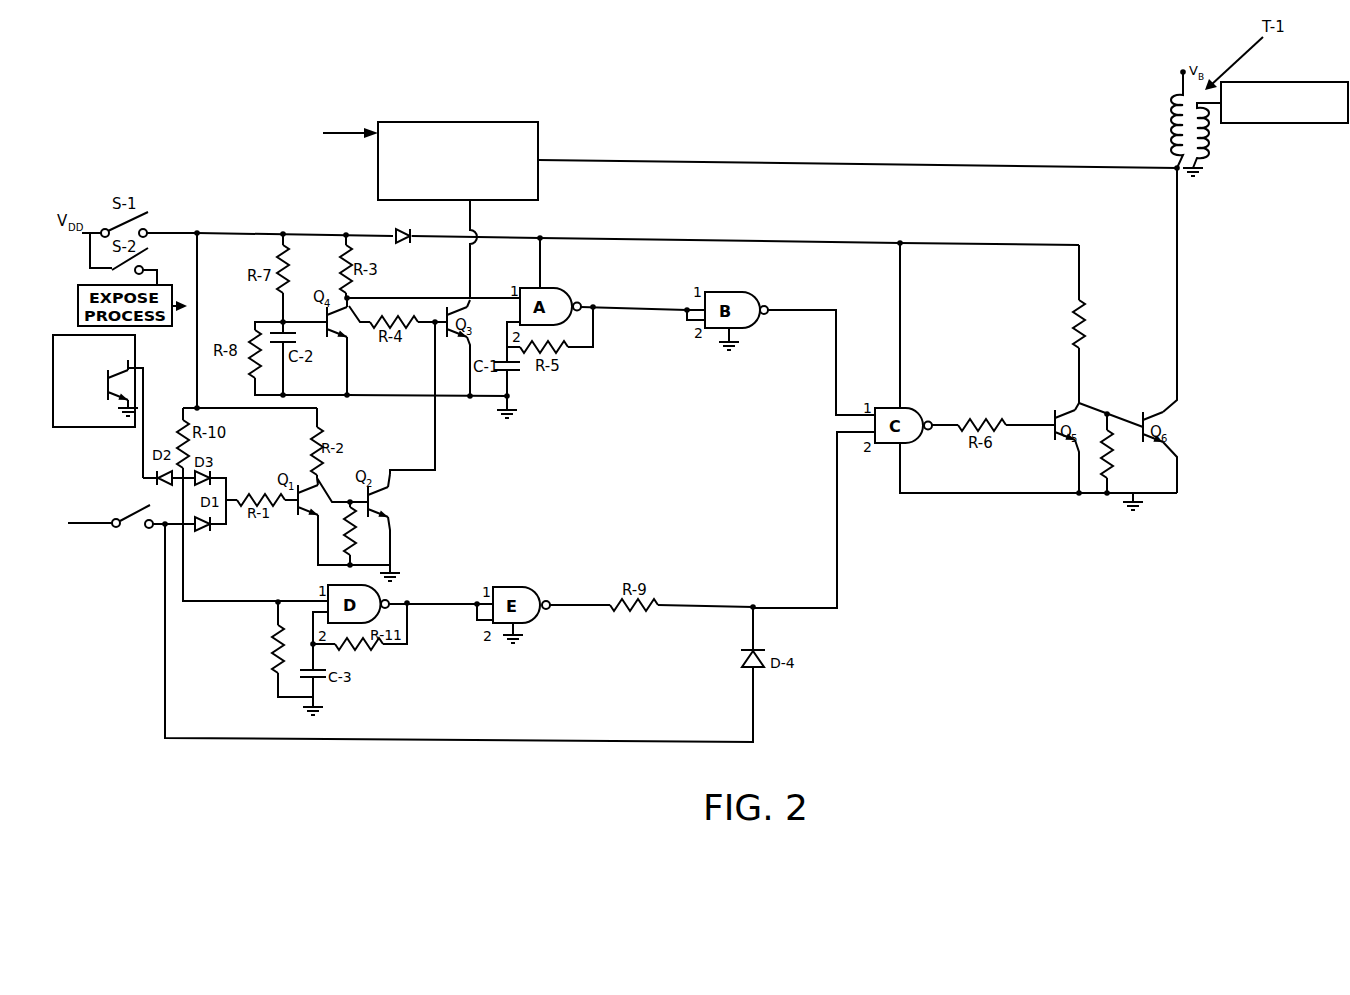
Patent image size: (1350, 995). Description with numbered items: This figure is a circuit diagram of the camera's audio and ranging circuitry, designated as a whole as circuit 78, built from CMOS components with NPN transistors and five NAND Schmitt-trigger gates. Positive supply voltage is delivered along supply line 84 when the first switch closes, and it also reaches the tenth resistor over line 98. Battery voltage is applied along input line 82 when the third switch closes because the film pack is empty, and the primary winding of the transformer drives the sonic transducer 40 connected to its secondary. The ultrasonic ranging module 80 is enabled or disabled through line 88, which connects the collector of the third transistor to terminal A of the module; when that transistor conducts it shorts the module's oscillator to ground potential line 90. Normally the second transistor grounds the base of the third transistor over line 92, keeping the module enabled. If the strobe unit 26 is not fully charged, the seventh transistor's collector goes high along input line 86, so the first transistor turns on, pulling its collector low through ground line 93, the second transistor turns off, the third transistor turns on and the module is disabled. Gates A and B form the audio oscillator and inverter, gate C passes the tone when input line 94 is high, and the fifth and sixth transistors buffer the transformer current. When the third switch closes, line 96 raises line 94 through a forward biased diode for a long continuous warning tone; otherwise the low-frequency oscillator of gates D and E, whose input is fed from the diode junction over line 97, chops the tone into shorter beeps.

The strobe unit 26 is at (135, 342).
The sonic transducer 40 is at (1327, 82).
The circuit 78 is at (731, 130).
The ultrasonic ranging module 80 is at (538, 138).
The input line 82 is at (89, 526).
The supply line 84 is at (180, 232).
The input line 86 is at (143, 390).
The line 88 is at (473, 217).
The ground potential line 90 is at (482, 398).
The line 92 is at (436, 440).
The ground line 93 is at (330, 567).
The input line 94 is at (837, 573).
The line 96 is at (487, 743).
The line 97 is at (241, 601).
The line 98 is at (198, 278).